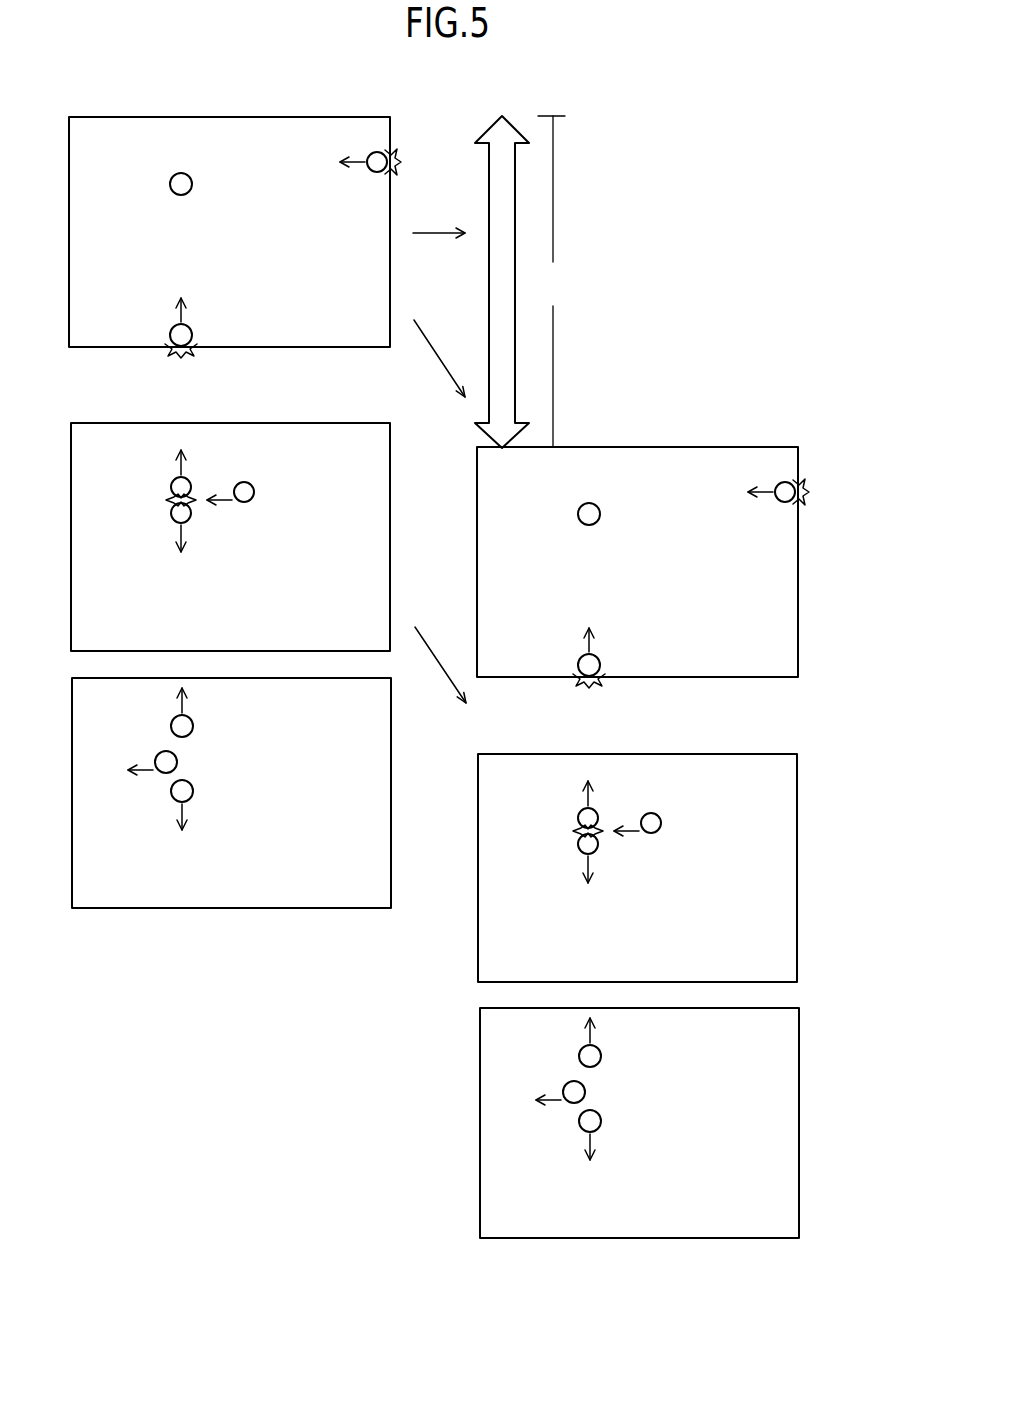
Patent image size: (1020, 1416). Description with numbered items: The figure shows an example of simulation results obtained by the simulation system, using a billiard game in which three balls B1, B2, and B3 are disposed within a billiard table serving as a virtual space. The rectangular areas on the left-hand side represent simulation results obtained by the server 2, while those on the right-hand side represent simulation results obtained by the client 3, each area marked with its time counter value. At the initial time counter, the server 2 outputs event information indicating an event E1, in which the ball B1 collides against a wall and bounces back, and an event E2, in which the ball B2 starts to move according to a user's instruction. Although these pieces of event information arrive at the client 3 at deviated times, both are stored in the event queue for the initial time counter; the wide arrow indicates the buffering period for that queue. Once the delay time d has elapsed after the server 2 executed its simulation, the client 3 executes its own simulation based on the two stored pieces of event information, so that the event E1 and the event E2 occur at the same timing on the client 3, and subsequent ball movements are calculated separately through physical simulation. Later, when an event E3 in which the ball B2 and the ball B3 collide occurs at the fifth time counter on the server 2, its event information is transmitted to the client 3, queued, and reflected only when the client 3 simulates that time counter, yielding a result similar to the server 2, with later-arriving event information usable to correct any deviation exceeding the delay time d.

The server 2 is at (230, 492).
The client 3 is at (638, 657).
The ball B1 is at (380, 172).
The ball B2 is at (172, 329).
The ball B3 is at (170, 184).
The event E1 is at (439, 218).
The event E2 is at (440, 358).
The event E3 is at (441, 665).
The delay time d is at (551, 281).